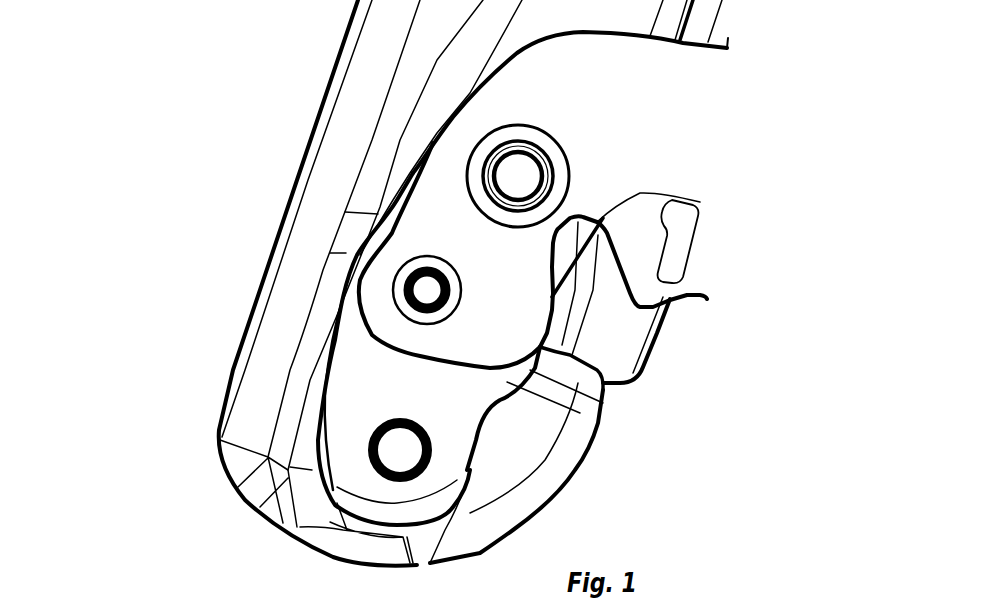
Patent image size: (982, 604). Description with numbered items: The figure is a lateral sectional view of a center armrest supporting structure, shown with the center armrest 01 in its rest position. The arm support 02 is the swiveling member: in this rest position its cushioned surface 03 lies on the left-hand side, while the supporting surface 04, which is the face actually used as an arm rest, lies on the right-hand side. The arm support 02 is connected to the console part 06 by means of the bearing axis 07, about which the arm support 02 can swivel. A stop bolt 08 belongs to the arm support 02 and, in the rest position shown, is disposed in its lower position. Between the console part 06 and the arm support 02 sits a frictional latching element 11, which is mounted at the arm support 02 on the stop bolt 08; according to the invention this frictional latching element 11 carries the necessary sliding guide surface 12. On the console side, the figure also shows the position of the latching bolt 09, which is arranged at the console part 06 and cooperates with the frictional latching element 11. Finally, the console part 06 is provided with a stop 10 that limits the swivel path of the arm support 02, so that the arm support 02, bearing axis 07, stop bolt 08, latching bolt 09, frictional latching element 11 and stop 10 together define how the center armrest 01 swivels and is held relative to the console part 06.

The center armrest 01 is at (116, 57).
The arm support 02 is at (330, 172).
The cushioned surface 03 is at (330, 54).
The supporting surface 04 is at (702, 347).
The console part 06 is at (630, 122).
The bearing axis 07 is at (425, 292).
The stop bolt 08 is at (400, 450).
The latching bolt 09 is at (519, 177).
The stop 10 is at (700, 202).
The frictional latching element 11 is at (360, 390).
The sliding guide surface 12 is at (605, 407).